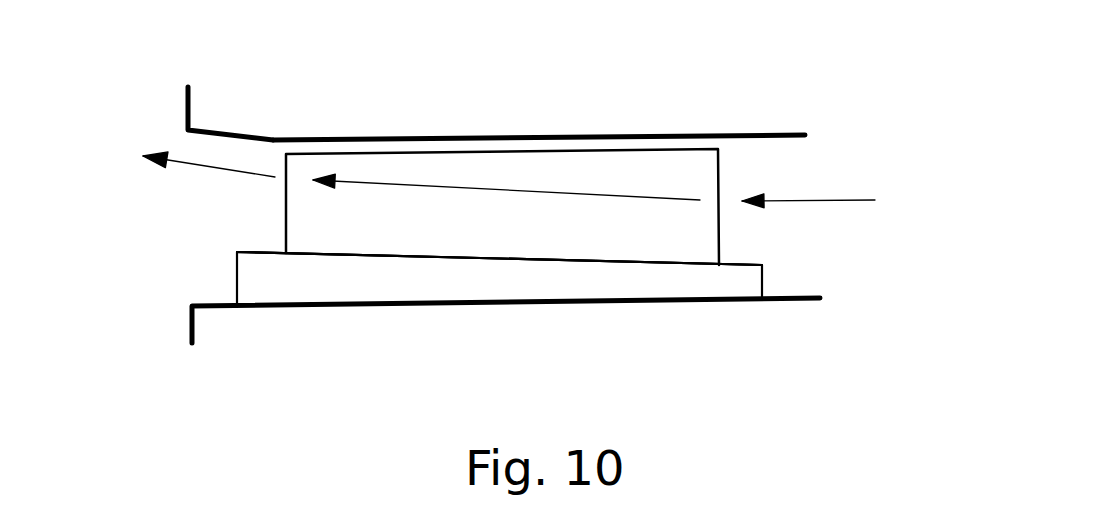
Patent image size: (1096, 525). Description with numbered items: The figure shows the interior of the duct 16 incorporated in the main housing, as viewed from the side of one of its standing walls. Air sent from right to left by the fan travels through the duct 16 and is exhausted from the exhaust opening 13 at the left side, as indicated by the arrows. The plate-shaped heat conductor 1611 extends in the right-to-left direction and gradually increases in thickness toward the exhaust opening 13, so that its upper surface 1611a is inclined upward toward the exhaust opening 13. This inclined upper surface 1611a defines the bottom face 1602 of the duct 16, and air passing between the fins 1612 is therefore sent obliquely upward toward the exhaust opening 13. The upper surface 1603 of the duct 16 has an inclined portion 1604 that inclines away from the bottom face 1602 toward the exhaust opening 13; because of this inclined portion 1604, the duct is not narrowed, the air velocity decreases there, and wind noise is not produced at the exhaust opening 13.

The duct 16 is at (592, 97).
The exhaust opening 13 is at (192, 304).
The inclined portion 1604 is at (203, 133).
The upper surface 1603 is at (781, 138).
The fins 1612 is at (667, 165).
The heat conductor 1611 is at (747, 286).
The upper surface 1611a is at (740, 262).
The bottom face 1602 is at (604, 246).